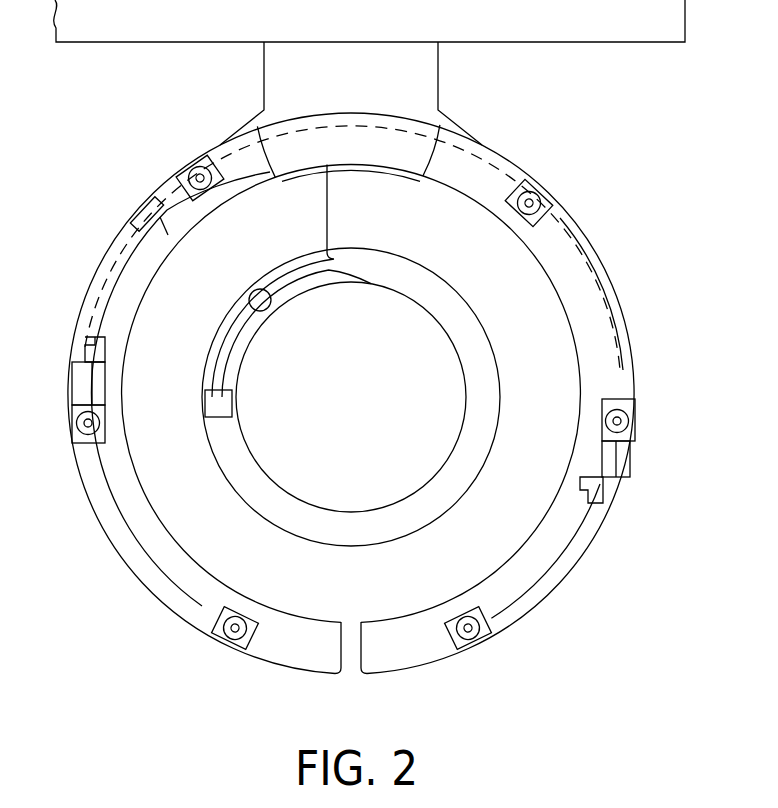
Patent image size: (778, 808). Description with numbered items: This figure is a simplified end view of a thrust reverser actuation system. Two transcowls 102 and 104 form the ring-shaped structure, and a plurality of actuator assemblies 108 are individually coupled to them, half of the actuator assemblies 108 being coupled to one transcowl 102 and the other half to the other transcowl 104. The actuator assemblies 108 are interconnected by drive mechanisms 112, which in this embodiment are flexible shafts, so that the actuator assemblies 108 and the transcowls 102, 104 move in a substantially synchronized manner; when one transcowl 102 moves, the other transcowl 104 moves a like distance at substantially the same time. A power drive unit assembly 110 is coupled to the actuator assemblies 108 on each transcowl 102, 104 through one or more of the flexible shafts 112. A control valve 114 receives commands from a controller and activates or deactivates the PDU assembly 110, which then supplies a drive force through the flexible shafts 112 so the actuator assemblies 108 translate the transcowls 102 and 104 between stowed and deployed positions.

The transcowl 102 is at (305, 662).
The transcowl 104 is at (400, 662).
The actuator assembly 108 is at (200, 164).
The power drive unit (PDU) assembly 110 is at (68, 434).
The drive mechanism 112 is at (326, 124).
The control valve 114 is at (271, 308).